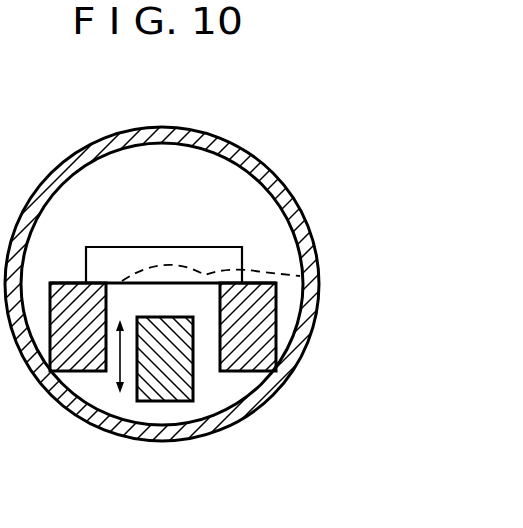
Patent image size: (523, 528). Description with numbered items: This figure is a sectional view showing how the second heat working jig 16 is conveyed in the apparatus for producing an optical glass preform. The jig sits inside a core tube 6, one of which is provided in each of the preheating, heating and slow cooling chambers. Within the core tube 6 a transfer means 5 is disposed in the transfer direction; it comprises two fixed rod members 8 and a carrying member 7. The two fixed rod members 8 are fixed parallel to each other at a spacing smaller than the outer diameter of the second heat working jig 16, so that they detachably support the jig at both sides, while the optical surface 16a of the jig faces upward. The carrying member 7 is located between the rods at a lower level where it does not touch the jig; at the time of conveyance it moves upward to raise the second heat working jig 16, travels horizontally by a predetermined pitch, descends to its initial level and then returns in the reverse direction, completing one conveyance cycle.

The transfer means 5 is at (283, 319).
The core tube 6 is at (292, 214).
The carrying member 7 is at (163, 387).
The fixed rod members 8 is at (80, 352).
The second heat working jig 16 is at (178, 254).
The optical surface 16a is at (300, 276).